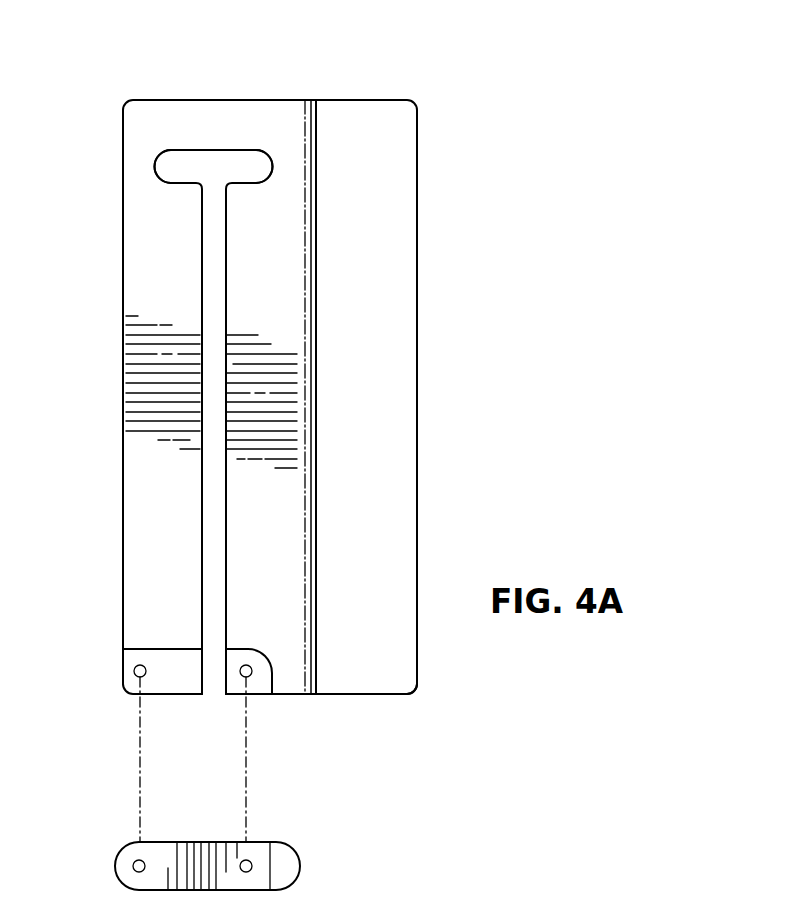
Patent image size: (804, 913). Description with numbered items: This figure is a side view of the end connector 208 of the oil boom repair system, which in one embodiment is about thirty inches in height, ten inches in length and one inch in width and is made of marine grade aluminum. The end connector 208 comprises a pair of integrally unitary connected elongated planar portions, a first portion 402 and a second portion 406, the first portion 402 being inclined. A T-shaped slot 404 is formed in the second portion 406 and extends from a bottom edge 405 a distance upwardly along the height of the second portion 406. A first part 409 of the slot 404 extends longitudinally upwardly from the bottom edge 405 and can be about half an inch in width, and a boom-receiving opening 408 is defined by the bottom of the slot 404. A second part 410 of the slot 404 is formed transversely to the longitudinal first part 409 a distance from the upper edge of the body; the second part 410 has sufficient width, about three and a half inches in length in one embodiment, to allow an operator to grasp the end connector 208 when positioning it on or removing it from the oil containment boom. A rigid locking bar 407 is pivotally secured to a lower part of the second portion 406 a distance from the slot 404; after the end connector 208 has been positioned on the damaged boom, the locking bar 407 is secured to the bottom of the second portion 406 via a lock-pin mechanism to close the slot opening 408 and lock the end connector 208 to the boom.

The end connector 208 is at (320, 351).
The first portion 402 is at (402, 280).
The T-shaped slot 404 is at (207, 324).
The bottom edge 405 is at (363, 694).
The second portion 406 is at (122, 505).
The rigid locking bar 407 is at (126, 653).
The boom-receiving opening 408 is at (213, 690).
The first part of the slot 409 is at (198, 416).
The second part of the slot 410 is at (156, 166).